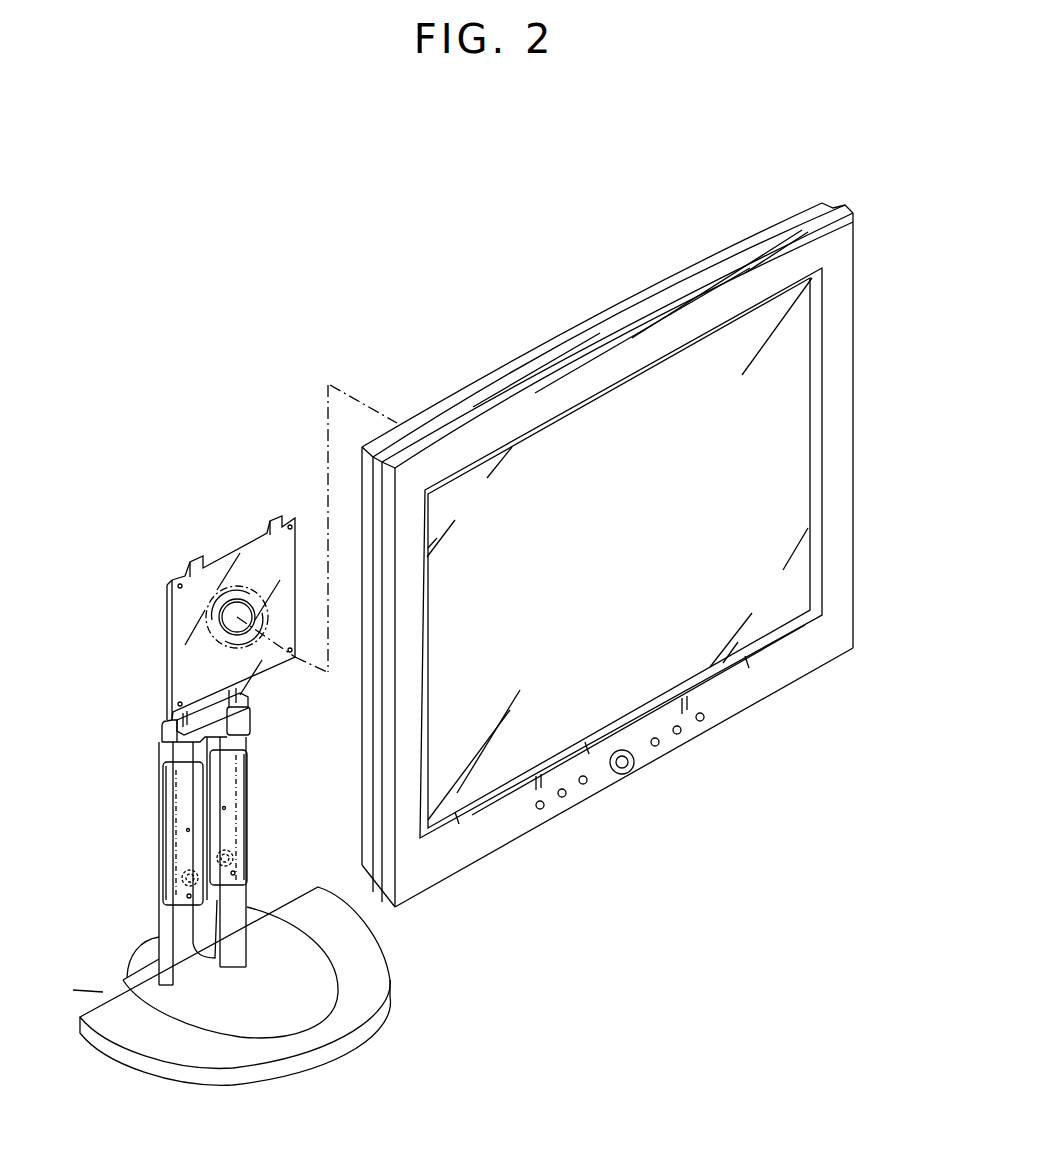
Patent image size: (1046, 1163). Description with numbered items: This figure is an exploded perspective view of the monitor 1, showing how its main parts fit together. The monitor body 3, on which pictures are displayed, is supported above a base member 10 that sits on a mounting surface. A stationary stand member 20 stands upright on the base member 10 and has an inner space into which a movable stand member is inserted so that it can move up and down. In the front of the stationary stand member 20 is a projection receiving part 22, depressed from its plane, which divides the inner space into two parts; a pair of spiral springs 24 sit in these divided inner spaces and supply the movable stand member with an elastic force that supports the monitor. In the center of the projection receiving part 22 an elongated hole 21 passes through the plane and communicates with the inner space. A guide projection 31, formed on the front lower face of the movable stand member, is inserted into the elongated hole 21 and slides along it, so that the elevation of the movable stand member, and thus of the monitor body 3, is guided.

The monitor 1 is at (303, 227).
The monitor body 3 is at (745, 707).
The base member 10 is at (362, 1038).
The stationary stand member 20 is at (162, 752).
The elongated hole 21 is at (203, 855).
The projection receiving part 22 is at (212, 798).
The spiral springs 24 is at (173, 803).
The guide projection 31 is at (208, 755).